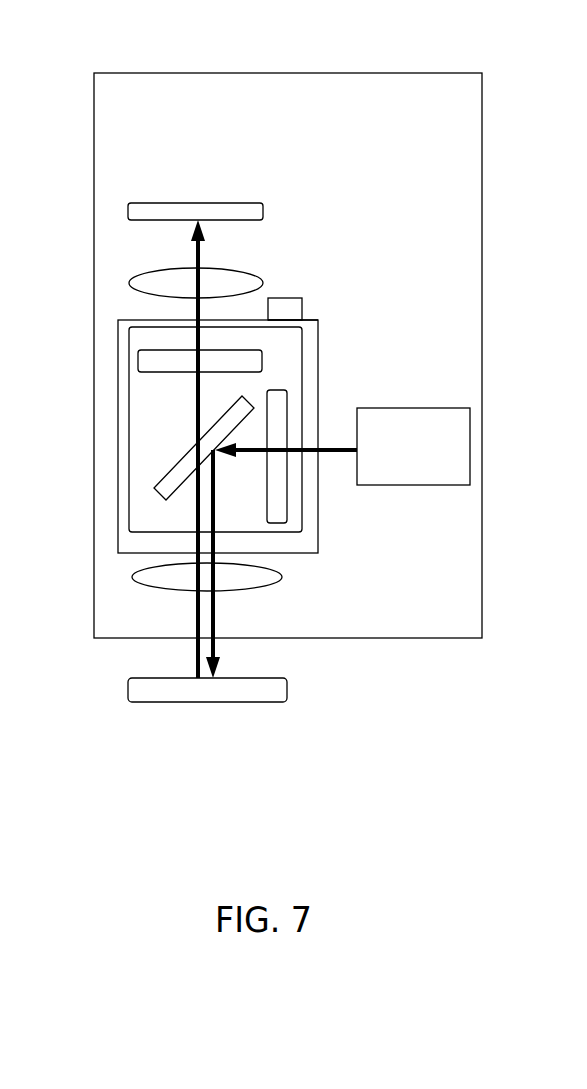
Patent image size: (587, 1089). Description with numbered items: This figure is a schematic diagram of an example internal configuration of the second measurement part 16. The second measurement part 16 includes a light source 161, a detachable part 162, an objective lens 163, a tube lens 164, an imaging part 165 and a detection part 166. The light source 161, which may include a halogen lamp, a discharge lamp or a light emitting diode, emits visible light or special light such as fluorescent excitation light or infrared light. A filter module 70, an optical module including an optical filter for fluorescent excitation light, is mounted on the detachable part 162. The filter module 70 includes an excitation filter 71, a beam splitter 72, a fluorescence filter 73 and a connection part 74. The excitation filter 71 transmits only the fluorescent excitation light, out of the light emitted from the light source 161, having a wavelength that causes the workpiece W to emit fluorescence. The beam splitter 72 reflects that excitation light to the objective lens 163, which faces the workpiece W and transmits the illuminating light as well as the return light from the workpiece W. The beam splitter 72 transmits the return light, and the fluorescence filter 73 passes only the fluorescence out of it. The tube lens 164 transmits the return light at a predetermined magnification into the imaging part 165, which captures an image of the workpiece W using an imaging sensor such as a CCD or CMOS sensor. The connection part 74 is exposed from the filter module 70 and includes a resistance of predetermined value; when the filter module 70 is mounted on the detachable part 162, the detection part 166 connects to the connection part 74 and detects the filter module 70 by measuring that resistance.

The second measurement part 16 is at (288, 323).
The light source 161 is at (417, 421).
The detachable part 162 is at (252, 419).
The objective lens 163 is at (237, 596).
The tube lens 164 is at (183, 261).
The imaging part 165 is at (210, 179).
The detection part 166 is at (290, 277).
The filter module 70 is at (179, 436).
The excitation filter 71 is at (328, 471).
The beam splitter 72 is at (149, 448).
The fluorescence filter 73 is at (147, 354).
The connection part 74 is at (312, 296).
The workpiece W is at (207, 733).